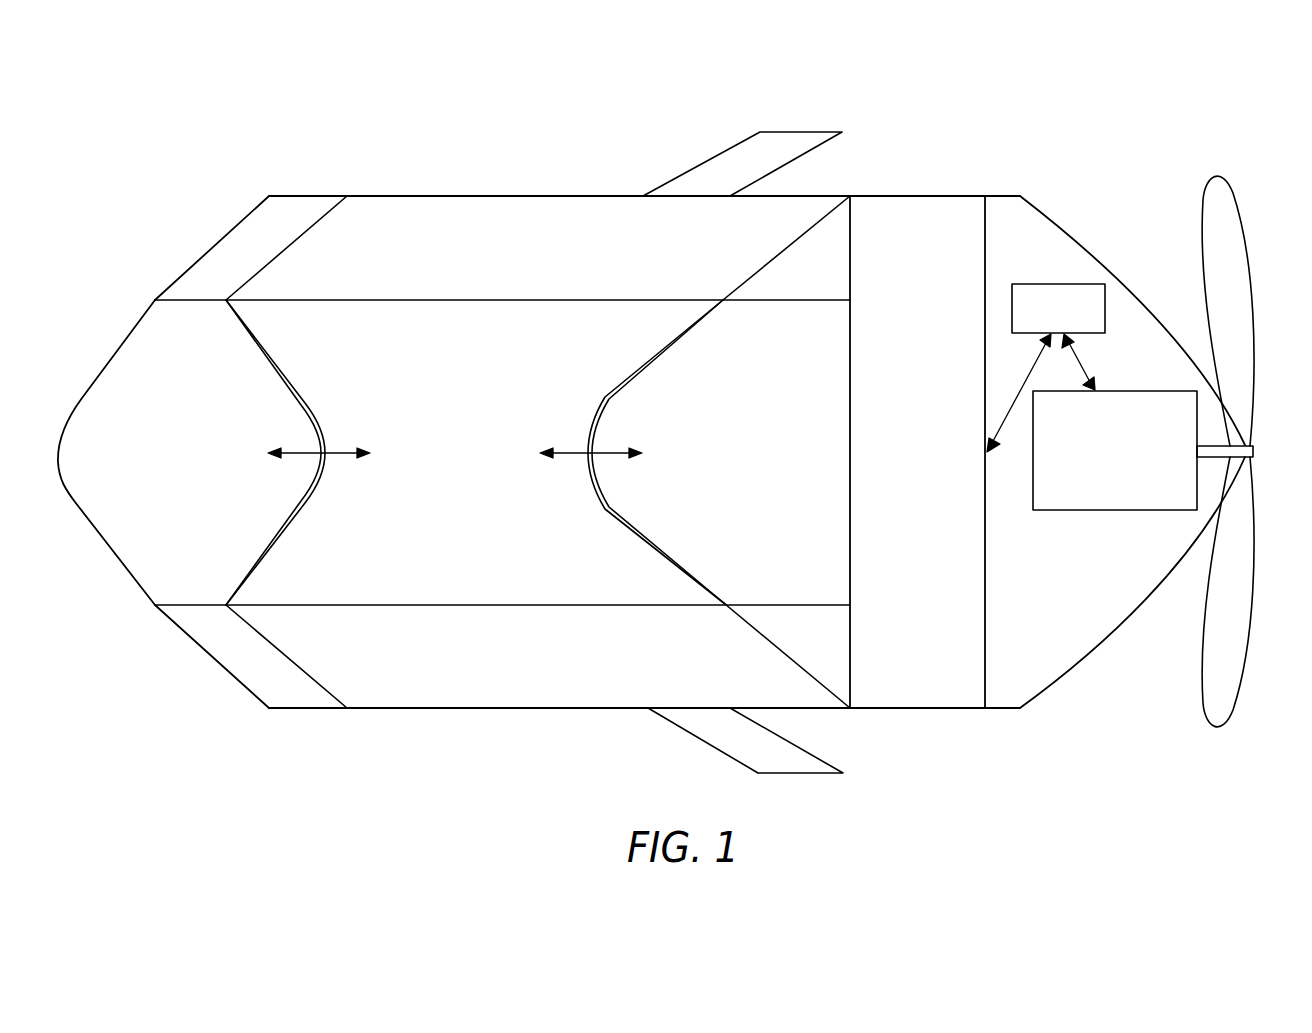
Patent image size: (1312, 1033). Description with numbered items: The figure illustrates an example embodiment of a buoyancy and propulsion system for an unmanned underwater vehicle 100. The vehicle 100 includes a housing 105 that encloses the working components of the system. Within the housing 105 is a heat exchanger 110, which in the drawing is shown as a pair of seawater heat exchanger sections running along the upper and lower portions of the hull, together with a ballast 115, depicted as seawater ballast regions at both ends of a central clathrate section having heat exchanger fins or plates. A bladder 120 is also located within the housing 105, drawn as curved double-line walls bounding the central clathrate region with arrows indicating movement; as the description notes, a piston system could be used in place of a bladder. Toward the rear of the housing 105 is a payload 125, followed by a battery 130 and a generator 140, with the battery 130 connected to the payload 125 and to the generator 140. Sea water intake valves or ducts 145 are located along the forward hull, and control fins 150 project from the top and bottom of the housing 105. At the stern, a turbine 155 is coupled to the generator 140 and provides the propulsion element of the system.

The unmanned underwater vehicle 100 is at (1165, 78).
The housing 105 is at (440, 195).
The heat exchanger 110 is at (532, 207).
The ballast 115 is at (138, 363).
The bladder 120 is at (303, 518).
The payload 125 is at (918, 206).
The battery 130 is at (1059, 282).
The generator 140 is at (1128, 389).
The sea water intake valves or ducts 145 is at (217, 255).
The control fins 150 is at (703, 159).
The turbine 155 is at (1257, 608).